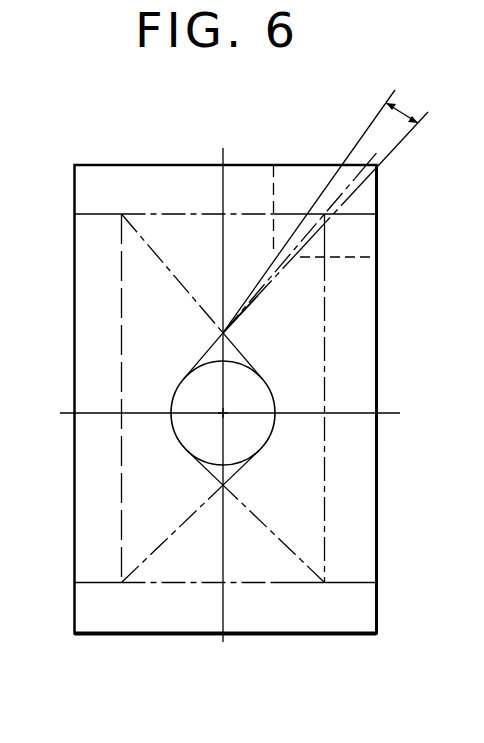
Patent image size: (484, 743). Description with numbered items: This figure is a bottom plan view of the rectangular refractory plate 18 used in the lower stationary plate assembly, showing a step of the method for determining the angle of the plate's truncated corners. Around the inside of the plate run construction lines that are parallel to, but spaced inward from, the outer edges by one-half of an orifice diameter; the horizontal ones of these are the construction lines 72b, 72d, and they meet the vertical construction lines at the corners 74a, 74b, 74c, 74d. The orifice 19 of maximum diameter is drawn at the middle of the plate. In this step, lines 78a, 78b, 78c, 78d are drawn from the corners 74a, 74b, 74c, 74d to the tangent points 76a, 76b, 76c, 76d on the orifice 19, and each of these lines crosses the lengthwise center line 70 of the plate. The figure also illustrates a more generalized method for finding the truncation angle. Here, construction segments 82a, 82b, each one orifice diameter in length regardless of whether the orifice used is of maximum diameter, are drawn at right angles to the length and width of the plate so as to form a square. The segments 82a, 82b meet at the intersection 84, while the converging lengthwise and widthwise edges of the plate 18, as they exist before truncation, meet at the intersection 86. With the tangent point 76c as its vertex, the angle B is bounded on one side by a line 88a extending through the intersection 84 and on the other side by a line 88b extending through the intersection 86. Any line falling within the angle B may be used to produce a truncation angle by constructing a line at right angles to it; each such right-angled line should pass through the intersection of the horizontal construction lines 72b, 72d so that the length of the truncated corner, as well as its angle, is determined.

The lengthwise center line 70 is at (224, 612).
The horizontal construction line 72d is at (183, 214).
The horizontal construction line 72b is at (200, 583).
The corner 74a is at (122, 582).
The corner 74b is at (324, 582).
The corner 74c is at (324, 214).
The corner 74d is at (122, 214).
The plate 18 is at (195, 249).
The orifice 19 is at (265, 434).
The tangent point 76a is at (252, 458).
The tangent point 76b is at (187, 451).
The tangent point 76c is at (190, 371).
The tangent point 76d is at (262, 346).
The tangent line 78a is at (198, 511).
The tangent line 78b is at (262, 523).
The tangent line 78c is at (258, 292).
The tangent line 78d is at (175, 277).
The construction segment 82a is at (274, 231).
The construction segment 82b is at (343, 258).
The intersection of segments 84 is at (280, 398).
The intersection of plate edges 86 is at (378, 166).
The line bounding angle B 88a is at (371, 123).
The line bounding angle B 88b is at (402, 140).
The angle B is at (412, 118).